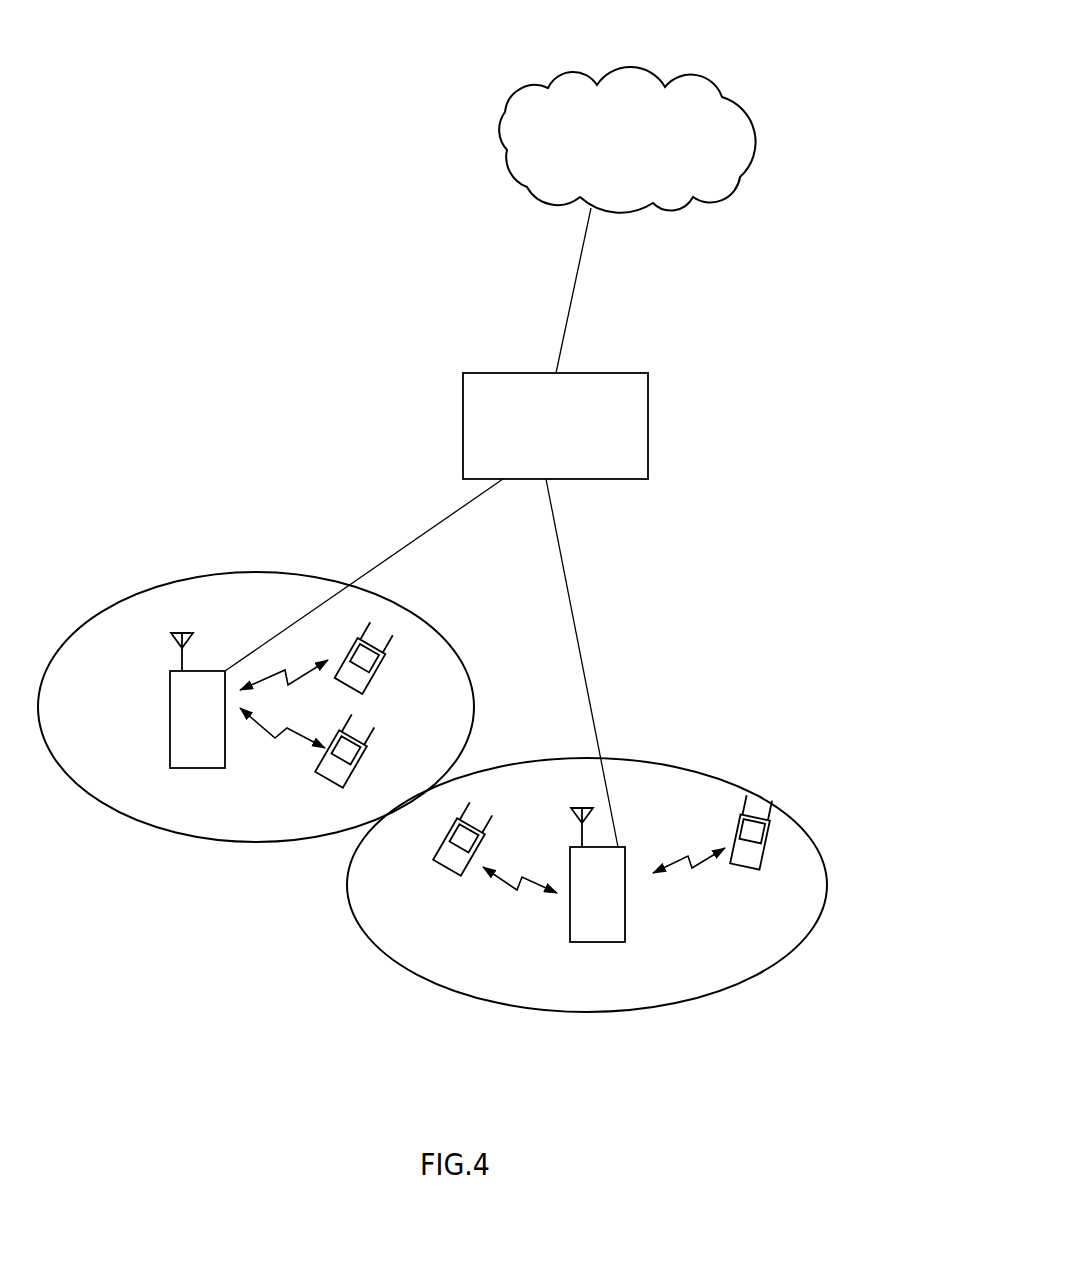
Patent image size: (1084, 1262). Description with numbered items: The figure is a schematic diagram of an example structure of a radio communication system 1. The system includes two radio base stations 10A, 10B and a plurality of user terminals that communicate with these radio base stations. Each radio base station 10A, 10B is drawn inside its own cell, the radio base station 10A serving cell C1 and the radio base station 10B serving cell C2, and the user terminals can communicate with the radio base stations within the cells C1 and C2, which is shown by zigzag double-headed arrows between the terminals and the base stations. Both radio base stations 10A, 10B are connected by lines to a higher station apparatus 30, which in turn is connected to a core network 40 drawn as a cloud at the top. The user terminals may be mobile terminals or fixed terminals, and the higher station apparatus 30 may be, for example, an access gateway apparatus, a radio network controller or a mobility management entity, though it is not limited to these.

The radio communication system 1 is at (298, 355).
The core network 40 is at (700, 78).
The higher station apparatus 30 is at (648, 412).
The cell C1 is at (700, 770).
The cell C2 is at (163, 583).
The radio base station 10A is at (570, 928).
The radio base station 10B is at (170, 753).